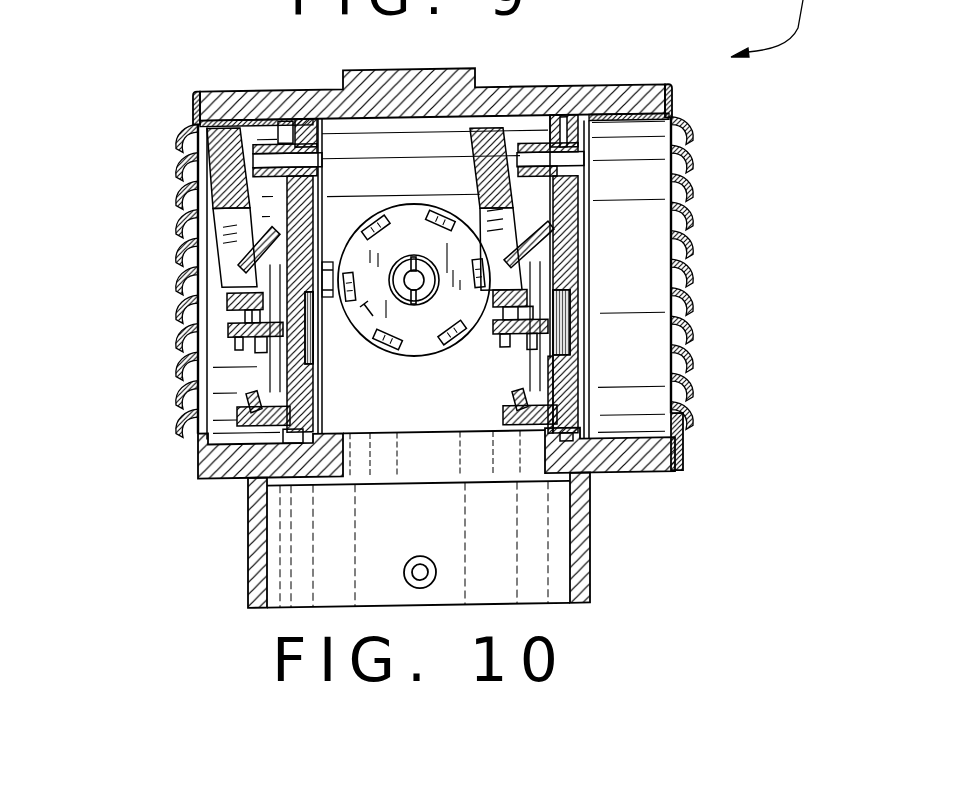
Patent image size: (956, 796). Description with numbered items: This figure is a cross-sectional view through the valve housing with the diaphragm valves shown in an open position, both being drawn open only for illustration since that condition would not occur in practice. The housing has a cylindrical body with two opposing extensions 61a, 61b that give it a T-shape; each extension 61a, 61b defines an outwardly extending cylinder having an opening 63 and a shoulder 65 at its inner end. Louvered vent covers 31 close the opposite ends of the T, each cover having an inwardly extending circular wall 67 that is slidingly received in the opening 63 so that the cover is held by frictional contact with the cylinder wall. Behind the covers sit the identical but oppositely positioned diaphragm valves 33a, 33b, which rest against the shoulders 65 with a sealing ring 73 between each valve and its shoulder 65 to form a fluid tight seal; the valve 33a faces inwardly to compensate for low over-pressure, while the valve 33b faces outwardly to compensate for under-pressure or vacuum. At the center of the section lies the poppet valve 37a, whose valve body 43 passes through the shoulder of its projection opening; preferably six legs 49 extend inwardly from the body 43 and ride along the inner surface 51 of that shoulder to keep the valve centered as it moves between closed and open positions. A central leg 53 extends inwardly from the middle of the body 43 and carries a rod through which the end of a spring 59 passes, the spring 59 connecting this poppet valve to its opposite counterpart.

The louvered vent cover 31 is at (194, 103).
The diaphragm valve 33a is at (606, 244).
The diaphragm valve 33b is at (222, 365).
The poppet valve 37a is at (392, 182).
The valve body 43 is at (366, 306).
The legs 49 is at (470, 305).
The inner surface of the shoulder 51 is at (358, 275).
The central leg 53 is at (408, 255).
The spring 59 is at (468, 302).
The extension 61a is at (636, 70).
The extension 61b is at (231, 80).
The opening 63 is at (684, 437).
The shoulder 65 is at (318, 448).
The circular wall 67 is at (640, 435).
The sealing ring 73 is at (317, 117).